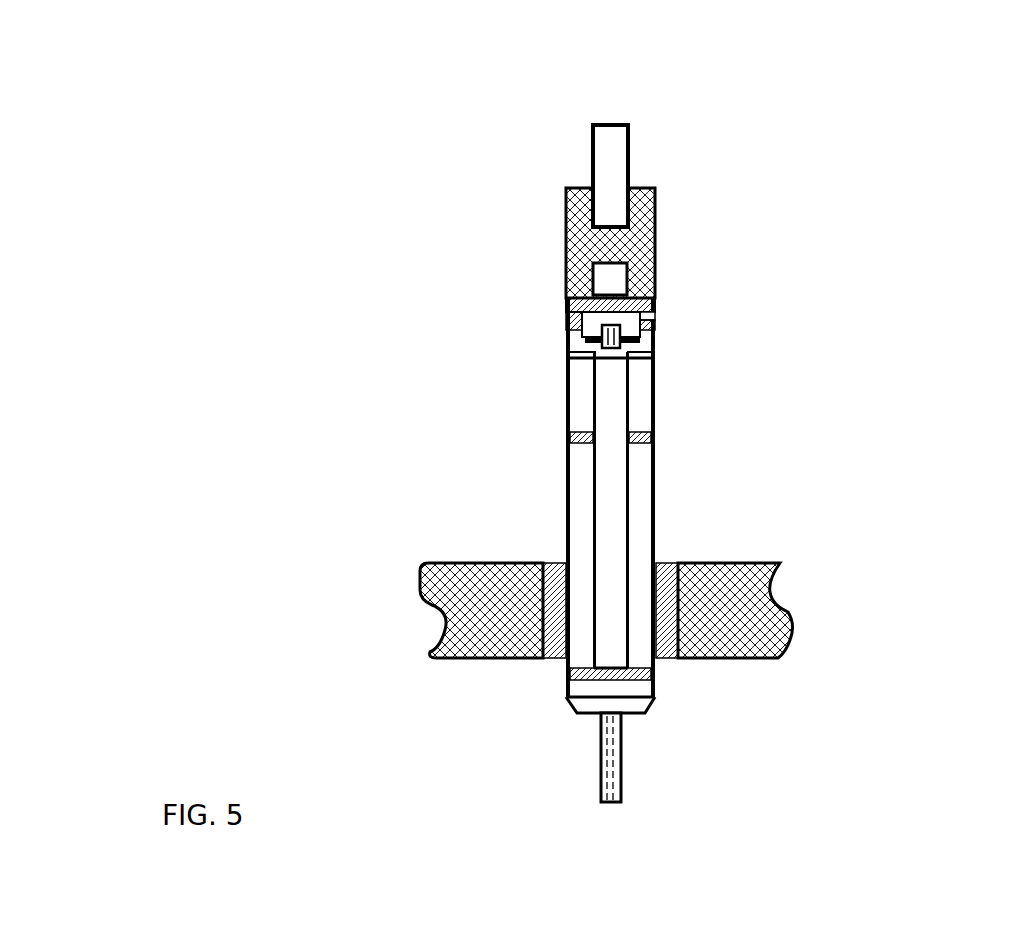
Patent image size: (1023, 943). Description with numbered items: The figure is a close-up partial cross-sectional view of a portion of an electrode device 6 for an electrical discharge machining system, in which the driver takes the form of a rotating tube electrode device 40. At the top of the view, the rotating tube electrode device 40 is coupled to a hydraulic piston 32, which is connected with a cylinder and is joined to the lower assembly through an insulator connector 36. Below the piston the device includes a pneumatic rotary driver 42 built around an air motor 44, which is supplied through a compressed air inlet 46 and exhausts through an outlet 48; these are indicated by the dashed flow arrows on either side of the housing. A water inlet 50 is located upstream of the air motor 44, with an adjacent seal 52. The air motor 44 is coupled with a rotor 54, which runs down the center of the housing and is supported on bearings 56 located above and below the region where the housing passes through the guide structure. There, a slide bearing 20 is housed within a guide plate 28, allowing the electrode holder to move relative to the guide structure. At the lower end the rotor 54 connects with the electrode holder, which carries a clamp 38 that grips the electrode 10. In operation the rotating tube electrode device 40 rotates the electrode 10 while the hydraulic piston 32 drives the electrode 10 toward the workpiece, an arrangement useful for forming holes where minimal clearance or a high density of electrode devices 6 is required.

The electrode device 6 is at (292, 91).
The electrode 10 is at (614, 760).
The slide bearing 20 is at (666, 580).
The guide plate 28 is at (731, 637).
The piston 32 is at (612, 137).
The insulator connector 36 is at (610, 240).
The clamp 38 is at (648, 698).
The rotating tube electrode device 40 is at (904, 197).
The pneumatic rotary driver 42 is at (538, 371).
The air motor 44 is at (639, 400).
The compressed air inlet 46 is at (660, 410).
The outlet 48 is at (567, 410).
The water inlet 50 is at (664, 315).
The seal 52 is at (568, 330).
The rotor 54 is at (607, 410).
The bearings 56 is at (568, 440).